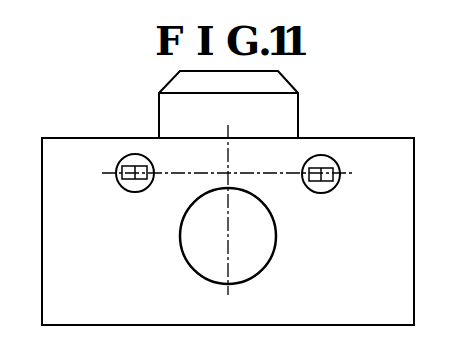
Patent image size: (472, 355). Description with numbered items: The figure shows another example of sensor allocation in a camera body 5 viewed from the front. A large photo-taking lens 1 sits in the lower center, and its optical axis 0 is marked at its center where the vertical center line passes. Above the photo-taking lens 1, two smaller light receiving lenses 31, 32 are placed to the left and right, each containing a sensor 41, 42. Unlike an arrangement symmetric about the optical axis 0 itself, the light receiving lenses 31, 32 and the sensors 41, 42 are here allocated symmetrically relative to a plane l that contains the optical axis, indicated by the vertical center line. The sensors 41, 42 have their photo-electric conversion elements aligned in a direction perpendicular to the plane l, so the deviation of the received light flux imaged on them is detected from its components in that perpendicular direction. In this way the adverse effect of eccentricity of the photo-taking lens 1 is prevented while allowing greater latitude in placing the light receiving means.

The camera body housing 5 is at (371, 148).
The photo-taking lens 1 is at (278, 233).
The optical axis 0 is at (227, 236).
The plane l is at (231, 132).
The light receiving lens 31 is at (121, 163).
The light receiving lens 32 is at (339, 188).
The sensor 41 is at (142, 165).
The sensor 42 is at (310, 167).